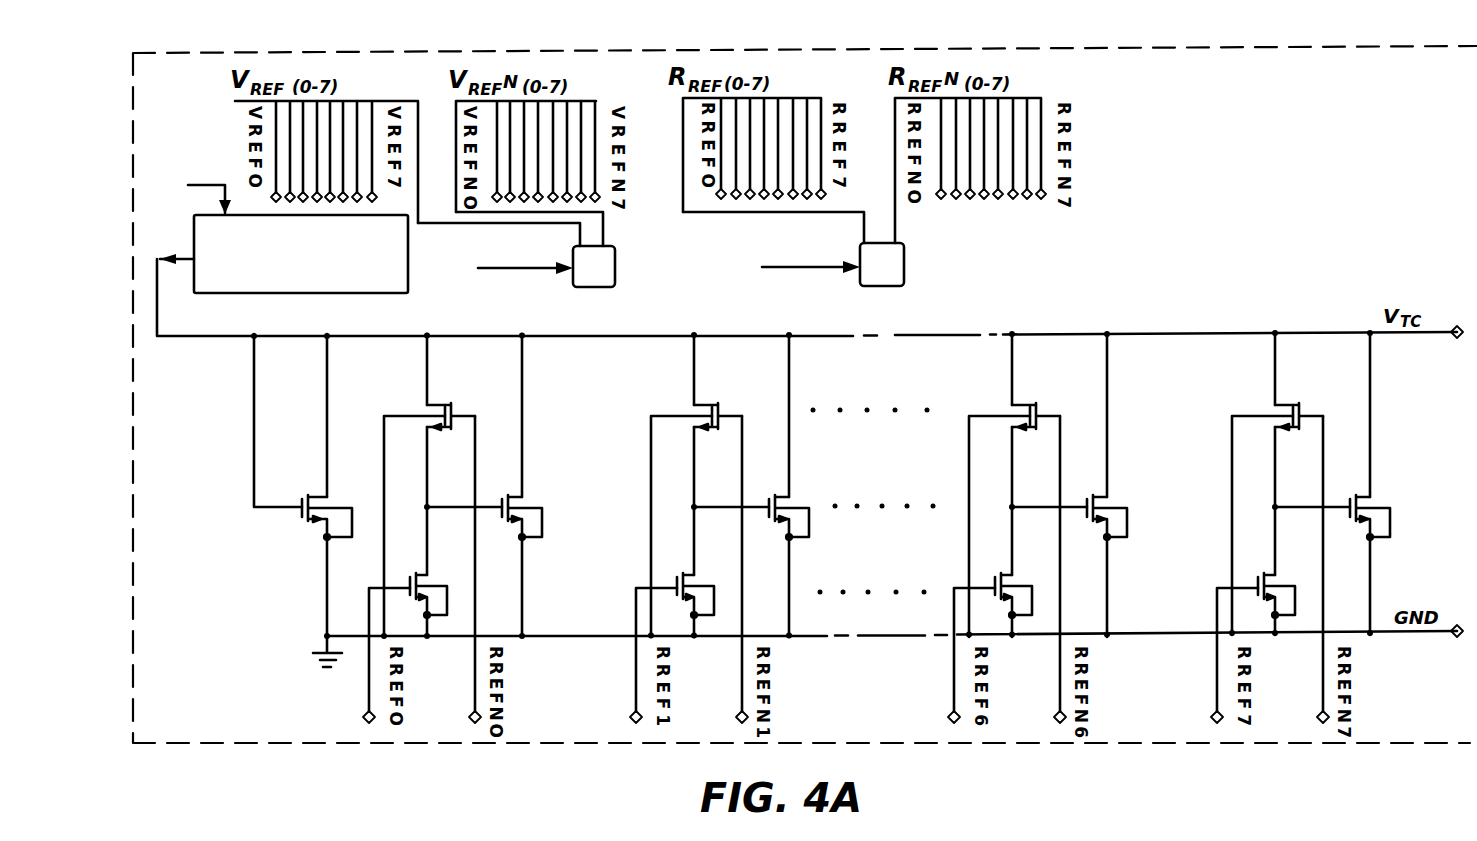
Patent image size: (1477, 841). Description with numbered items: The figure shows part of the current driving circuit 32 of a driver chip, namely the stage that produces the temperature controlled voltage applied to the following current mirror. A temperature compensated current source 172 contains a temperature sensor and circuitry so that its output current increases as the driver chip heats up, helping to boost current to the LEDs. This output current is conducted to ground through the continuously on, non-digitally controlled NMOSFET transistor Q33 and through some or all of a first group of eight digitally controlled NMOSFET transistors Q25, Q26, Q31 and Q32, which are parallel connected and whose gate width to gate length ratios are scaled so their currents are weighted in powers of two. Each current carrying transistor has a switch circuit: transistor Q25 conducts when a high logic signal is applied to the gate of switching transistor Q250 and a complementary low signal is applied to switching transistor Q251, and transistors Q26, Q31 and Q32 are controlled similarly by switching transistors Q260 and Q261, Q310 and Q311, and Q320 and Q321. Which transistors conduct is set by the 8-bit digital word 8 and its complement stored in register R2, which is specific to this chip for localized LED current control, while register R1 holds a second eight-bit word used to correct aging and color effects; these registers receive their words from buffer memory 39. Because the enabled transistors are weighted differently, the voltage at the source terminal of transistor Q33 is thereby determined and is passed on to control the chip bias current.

The current driving circuit 32 is at (1052, 47).
The temperature compensated current source 172 is at (408, 268).
The 8-bit digital word 8 is at (897, 208).
The buffer memory 39 is at (669, 269).
The register R1 is at (594, 266).
The register R2 is at (882, 264).
The non-digitally controlled NMOSFET transistor Q33 is at (338, 507).
The switching transistor Q320 is at (459, 402).
The switching transistor Q321 is at (438, 577).
The digitally controlled NMOSFET transistor Q32 is at (536, 505).
The switching transistor Q310 is at (726, 402).
The switching transistor Q311 is at (705, 577).
The digitally controlled NMOSFET transistor Q31 is at (803, 505).
The switching transistor Q260 is at (1044, 402).
The switching transistor Q261 is at (1023, 577).
The digitally controlled NMOSFET transistor Q26 is at (1121, 505).
The switching transistor Q250 is at (1307, 402).
The switching transistor Q251 is at (1286, 577).
The digitally controlled NMOSFET transistor Q25 is at (1384, 505).